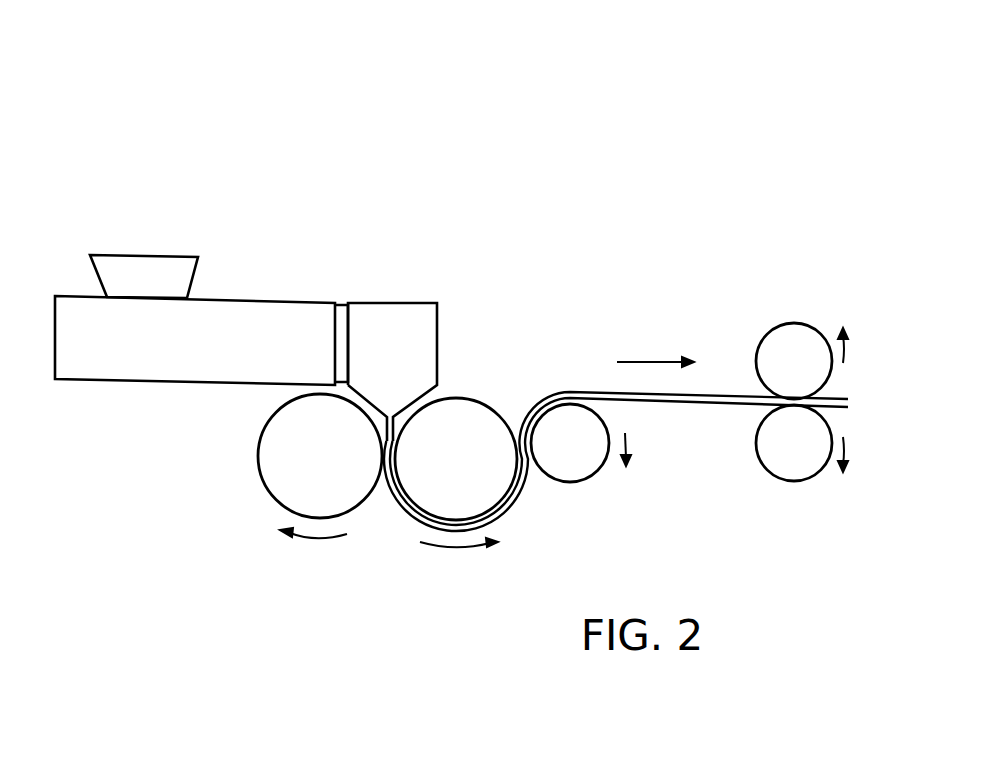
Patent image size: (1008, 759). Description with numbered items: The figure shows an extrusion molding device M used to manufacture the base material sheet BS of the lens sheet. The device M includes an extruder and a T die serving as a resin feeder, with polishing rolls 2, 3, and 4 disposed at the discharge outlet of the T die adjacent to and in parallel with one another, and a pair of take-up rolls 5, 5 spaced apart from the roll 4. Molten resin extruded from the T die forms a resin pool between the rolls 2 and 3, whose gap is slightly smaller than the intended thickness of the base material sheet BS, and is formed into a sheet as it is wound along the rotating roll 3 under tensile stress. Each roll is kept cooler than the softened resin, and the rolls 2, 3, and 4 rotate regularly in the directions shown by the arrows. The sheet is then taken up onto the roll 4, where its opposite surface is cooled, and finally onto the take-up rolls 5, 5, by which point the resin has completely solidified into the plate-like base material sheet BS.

The extrusion molding device M is at (512, 156).
The polishing roll 2 is at (320, 456).
The polishing roll 3 is at (456, 459).
The polishing roll 4 is at (570, 443).
The take-up rolls 5 is at (794, 402).
The base material sheet BS is at (644, 460).